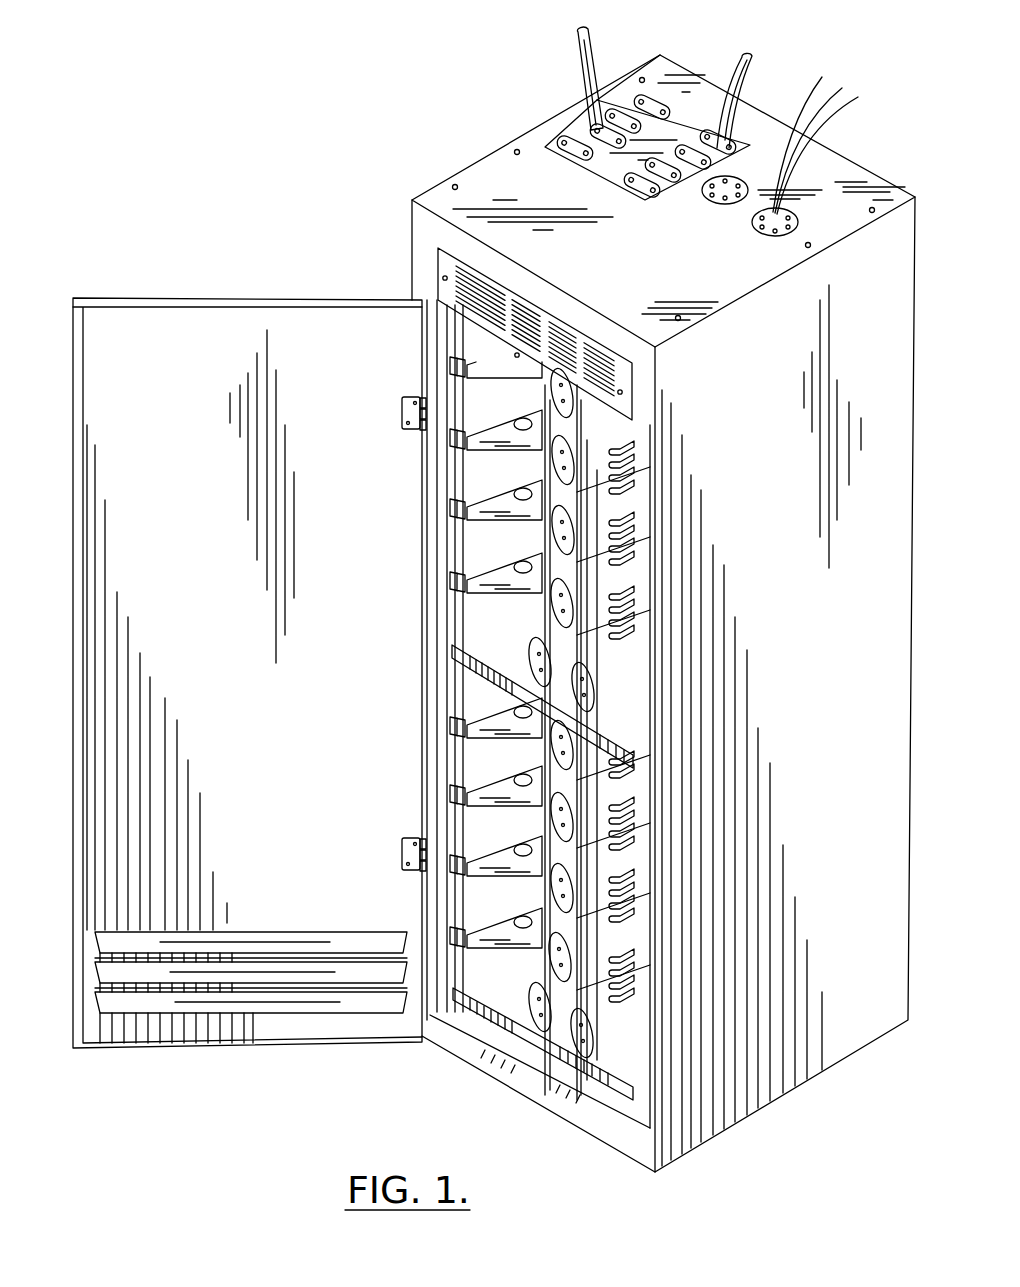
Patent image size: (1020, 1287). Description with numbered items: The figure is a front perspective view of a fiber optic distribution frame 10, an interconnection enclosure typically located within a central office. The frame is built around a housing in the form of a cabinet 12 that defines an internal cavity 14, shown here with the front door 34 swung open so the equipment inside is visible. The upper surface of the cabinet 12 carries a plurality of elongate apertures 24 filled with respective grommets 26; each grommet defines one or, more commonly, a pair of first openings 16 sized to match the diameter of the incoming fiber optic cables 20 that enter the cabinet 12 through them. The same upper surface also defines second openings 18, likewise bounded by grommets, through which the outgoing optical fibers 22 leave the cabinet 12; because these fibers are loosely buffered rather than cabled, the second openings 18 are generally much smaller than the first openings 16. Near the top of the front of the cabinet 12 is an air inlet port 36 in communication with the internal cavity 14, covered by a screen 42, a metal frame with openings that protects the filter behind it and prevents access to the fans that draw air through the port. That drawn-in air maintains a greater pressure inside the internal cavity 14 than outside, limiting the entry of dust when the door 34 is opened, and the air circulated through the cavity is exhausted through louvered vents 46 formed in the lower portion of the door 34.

The fiber optic distribution frame 10 is at (928, 158).
The cabinet 12 is at (890, 372).
The internal cavity 14 is at (492, 965).
The first openings 16 is at (645, 98).
The second openings 18 is at (788, 215).
The fiber optic cables 20 is at (590, 46).
The outgoing optical fibers 22 is at (823, 100).
The elongate apertures 24 is at (558, 150).
The grommets 26 is at (578, 148).
The door 34 is at (252, 1031).
The air inlet port 36 is at (532, 335).
The screen 42 is at (445, 263).
The vents 46 is at (357, 1007).